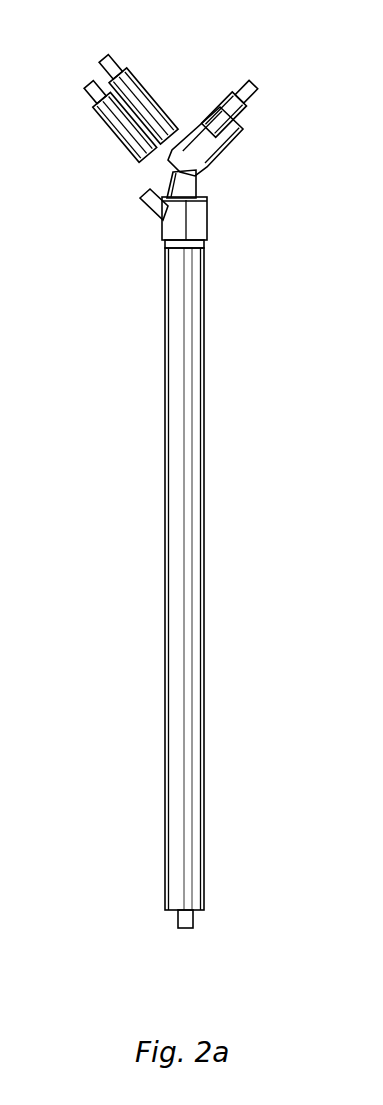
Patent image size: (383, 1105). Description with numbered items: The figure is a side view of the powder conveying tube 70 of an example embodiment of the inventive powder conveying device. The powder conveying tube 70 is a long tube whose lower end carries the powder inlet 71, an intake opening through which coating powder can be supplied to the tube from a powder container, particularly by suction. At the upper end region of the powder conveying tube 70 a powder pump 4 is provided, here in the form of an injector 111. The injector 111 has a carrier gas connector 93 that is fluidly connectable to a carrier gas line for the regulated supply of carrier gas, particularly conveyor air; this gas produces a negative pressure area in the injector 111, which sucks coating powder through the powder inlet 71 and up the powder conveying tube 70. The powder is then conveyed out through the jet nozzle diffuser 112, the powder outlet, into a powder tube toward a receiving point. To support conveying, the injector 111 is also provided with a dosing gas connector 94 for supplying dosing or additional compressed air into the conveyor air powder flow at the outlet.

The powder pump 4 is at (167, 491).
The injector 111 is at (205, 111).
The carrier gas connector 93 is at (94, 114).
The dosing gas connector 94 is at (146, 97).
The jet nozzle diffuser 112 is at (252, 93).
The powder conveying tube 70 is at (155, 579).
The powder inlet 71 is at (155, 934).